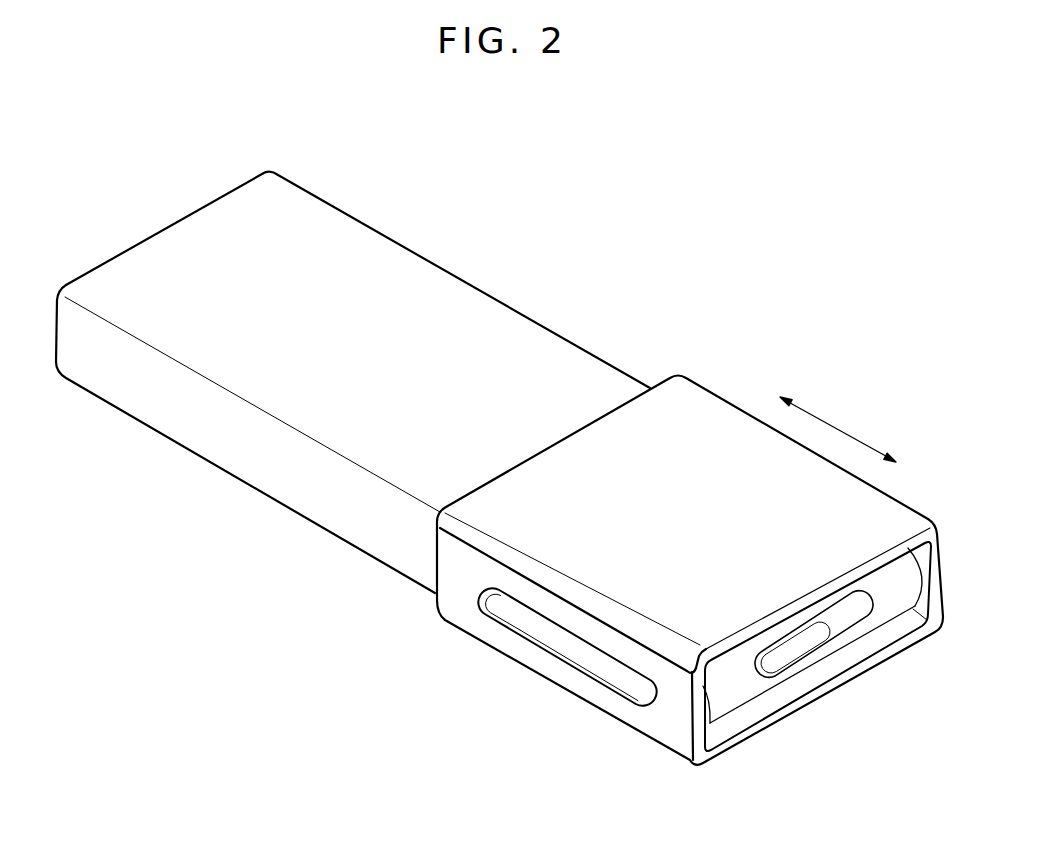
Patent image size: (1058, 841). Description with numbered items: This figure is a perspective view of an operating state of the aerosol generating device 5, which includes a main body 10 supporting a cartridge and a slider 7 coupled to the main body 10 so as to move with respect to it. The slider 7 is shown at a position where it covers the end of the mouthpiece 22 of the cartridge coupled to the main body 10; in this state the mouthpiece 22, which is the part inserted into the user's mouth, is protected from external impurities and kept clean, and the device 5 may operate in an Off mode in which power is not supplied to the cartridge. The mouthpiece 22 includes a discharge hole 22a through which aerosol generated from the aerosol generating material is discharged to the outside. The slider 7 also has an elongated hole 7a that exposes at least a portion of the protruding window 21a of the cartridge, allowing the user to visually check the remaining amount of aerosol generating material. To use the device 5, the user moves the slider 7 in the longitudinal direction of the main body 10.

The aerosol generating device 5 is at (621, 207).
The main body 10 is at (345, 527).
The slider 7 is at (543, 662).
The elongated hole 7a is at (510, 625).
The protruding window 21a is at (605, 662).
The mouthpiece 22 is at (730, 693).
The discharge hole 22a is at (795, 636).